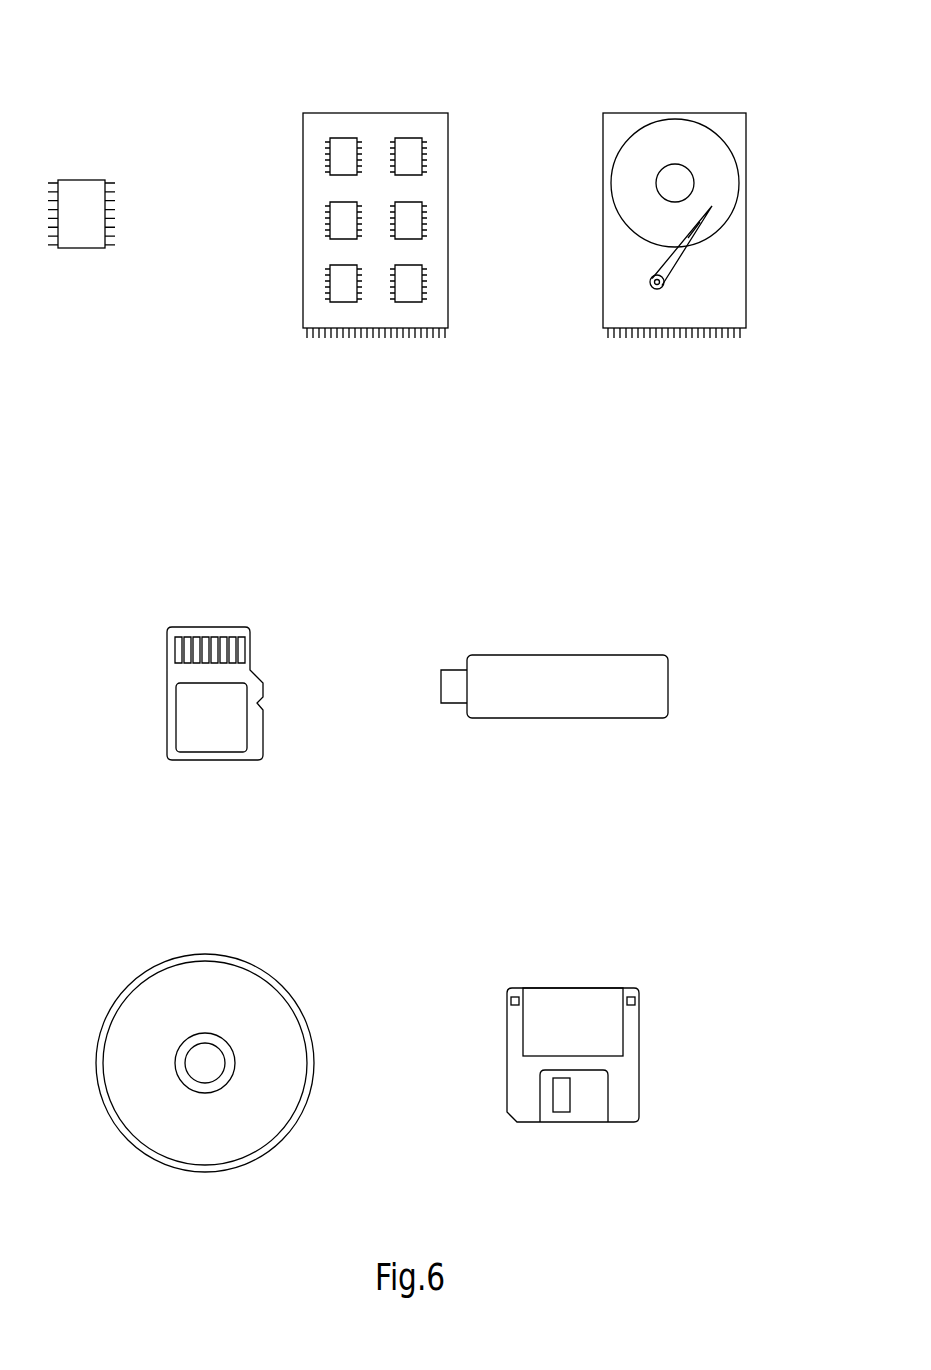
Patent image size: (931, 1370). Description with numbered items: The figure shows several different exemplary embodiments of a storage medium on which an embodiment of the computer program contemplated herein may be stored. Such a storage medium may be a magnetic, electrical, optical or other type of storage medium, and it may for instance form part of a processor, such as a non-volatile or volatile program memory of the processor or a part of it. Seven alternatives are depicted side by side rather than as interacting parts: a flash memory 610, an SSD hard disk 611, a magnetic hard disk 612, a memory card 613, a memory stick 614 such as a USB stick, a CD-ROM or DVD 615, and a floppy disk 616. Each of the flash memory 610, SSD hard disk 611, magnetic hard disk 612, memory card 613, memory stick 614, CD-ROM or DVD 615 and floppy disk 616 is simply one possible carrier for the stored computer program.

The flash memory 610 is at (108, 138).
The SSD hard disk 611 is at (448, 73).
The magnetic hard disk 612 is at (748, 73).
The memory card 613 is at (252, 595).
The memory stick 614 is at (640, 614).
The CD-ROM or DVD 615 is at (293, 948).
The floppy disk 616 is at (635, 948).